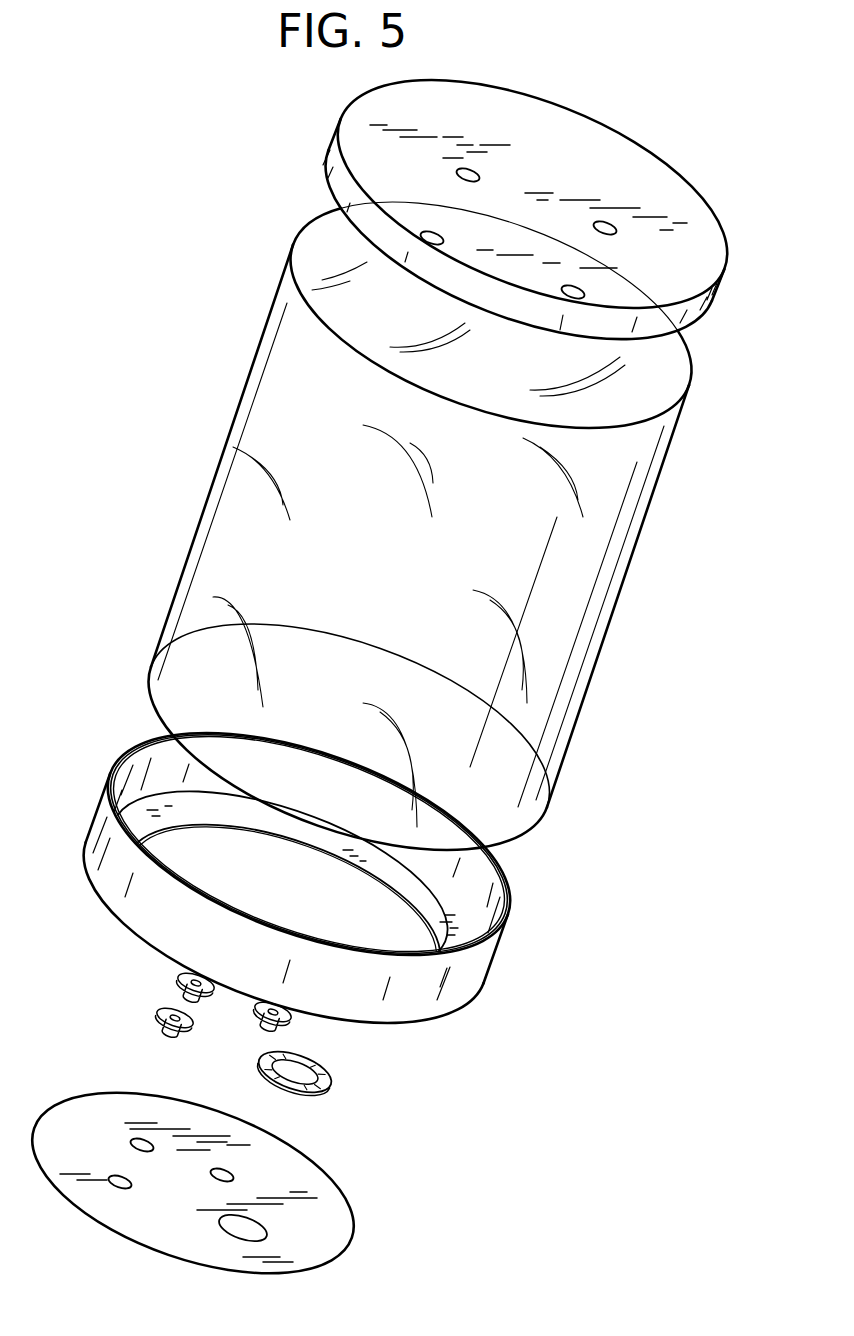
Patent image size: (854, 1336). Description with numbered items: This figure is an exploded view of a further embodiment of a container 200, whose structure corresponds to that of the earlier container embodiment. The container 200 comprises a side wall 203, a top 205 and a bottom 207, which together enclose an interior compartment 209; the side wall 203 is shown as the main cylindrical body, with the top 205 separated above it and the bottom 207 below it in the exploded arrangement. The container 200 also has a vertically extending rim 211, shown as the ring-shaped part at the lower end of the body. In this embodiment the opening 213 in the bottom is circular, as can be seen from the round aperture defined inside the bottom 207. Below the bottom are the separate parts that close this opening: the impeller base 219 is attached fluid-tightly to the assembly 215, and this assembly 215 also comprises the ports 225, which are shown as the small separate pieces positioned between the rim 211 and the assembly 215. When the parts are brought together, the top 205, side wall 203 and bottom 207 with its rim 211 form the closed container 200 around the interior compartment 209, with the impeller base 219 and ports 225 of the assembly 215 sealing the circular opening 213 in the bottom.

The container 200 is at (633, 617).
The side wall 203 is at (636, 542).
The top 205 is at (688, 197).
The bottom 207 is at (453, 937).
The interior compartment 209 is at (550, 640).
The vertically extending rim 211 is at (498, 940).
The opening 213 is at (203, 875).
The assembly 215 is at (310, 1177).
The impeller base 219 is at (330, 1079).
The ports 225 is at (293, 1021).